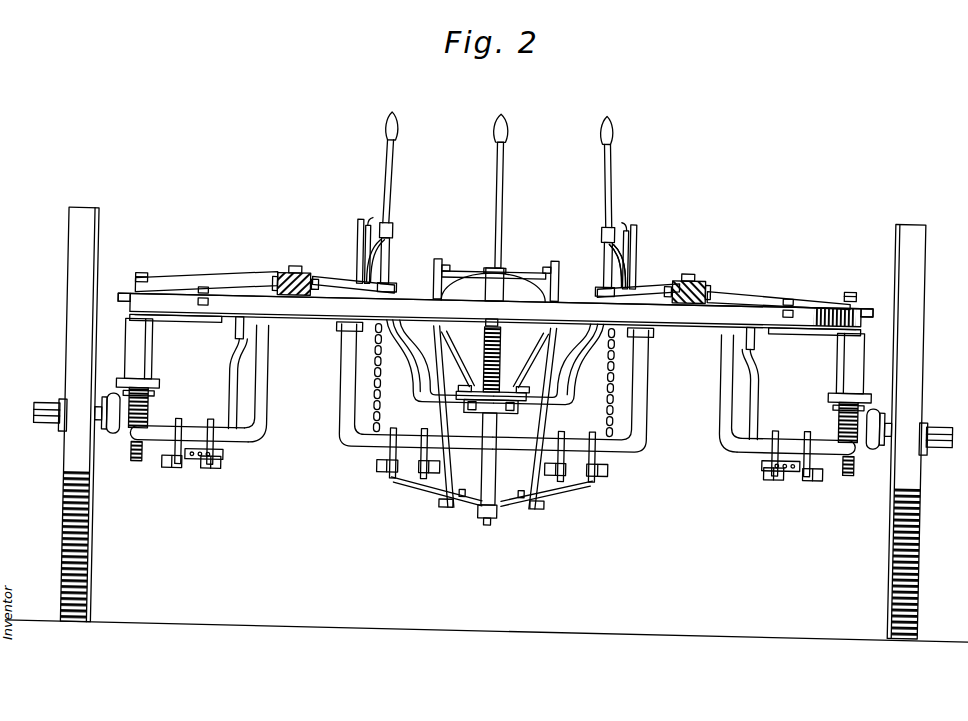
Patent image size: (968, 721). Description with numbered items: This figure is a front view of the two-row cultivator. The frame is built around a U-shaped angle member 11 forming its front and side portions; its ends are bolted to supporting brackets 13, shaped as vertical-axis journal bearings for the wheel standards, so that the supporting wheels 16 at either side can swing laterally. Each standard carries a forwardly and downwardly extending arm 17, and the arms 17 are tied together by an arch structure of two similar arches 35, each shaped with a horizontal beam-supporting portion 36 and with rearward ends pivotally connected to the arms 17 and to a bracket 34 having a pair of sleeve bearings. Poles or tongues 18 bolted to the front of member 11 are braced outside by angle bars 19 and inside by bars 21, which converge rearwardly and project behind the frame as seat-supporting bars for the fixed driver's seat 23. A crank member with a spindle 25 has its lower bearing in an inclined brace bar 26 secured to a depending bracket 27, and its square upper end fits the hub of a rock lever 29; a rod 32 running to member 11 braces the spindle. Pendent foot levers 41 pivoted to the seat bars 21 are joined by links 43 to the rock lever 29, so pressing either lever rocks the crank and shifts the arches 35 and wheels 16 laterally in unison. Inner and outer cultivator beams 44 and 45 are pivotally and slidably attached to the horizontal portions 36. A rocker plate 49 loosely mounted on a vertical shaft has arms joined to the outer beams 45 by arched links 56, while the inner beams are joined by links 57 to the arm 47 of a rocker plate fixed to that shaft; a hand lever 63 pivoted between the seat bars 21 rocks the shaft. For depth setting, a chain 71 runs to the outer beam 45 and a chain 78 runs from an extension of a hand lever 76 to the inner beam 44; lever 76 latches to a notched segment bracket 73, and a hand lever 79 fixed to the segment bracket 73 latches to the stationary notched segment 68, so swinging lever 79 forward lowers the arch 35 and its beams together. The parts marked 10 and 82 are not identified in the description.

The bolt 10 is at (150, 272).
The U-shaped angle member 11 is at (168, 306).
The supporting brackets 13 is at (128, 322).
The supporting wheels 16 is at (66, 330).
The arms 17 is at (175, 420).
The poles or tongues 18 is at (290, 272).
The angle bars 19 is at (232, 288).
The seat-supporting bars 21 is at (340, 283).
The driver's seat 23 is at (546, 302).
The spindle 25 is at (538, 352).
The inclined brace bar 26 is at (504, 362).
The bracket 27 is at (446, 366).
The rock lever 29 is at (526, 271).
The rod 32 is at (486, 274).
The bracket 34 is at (484, 468).
The arches 35 is at (270, 389).
The horizontal beam-supporting portions 36 is at (200, 435).
The pendent levers 41 is at (458, 398).
The links 43 is at (458, 256).
The inner beams 44 is at (388, 478).
The outer beams 45 is at (206, 494).
The arm 47 is at (494, 518).
The rocker plate 49 is at (502, 414).
The arched links 56 is at (231, 374).
The links 57 is at (436, 486).
The hand lever 63 is at (502, 214).
The notched segment 68 is at (356, 232).
The chain 71 is at (236, 338).
The segment bracket 73 is at (392, 238).
The hand lever 76 is at (391, 168).
The chain 78 is at (383, 370).
The hand lever 79 is at (365, 226).
The link 82 is at (624, 280).